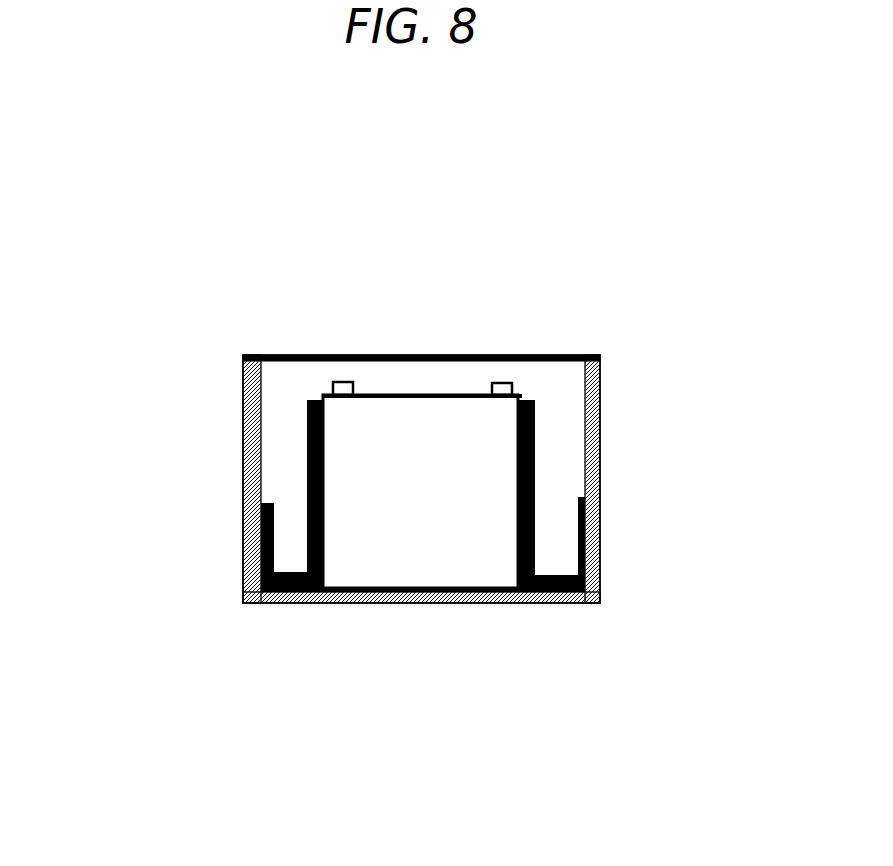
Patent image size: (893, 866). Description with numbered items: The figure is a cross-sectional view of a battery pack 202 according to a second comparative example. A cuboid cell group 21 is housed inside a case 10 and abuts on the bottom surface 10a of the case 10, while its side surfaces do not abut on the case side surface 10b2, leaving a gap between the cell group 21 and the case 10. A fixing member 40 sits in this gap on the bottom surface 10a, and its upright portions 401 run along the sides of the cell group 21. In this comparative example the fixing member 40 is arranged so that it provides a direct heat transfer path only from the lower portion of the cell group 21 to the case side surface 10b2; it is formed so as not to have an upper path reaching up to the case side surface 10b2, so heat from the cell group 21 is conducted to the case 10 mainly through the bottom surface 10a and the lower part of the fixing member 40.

The battery pack 202 is at (163, 162).
The case 10 is at (243, 389).
The case side surface 10b2 is at (240, 510).
The bottom surface 10a is at (458, 603).
The fixing member 40 is at (345, 603).
The side portion of heat conductive member 401 is at (535, 533).
The cell group 21 is at (442, 395).